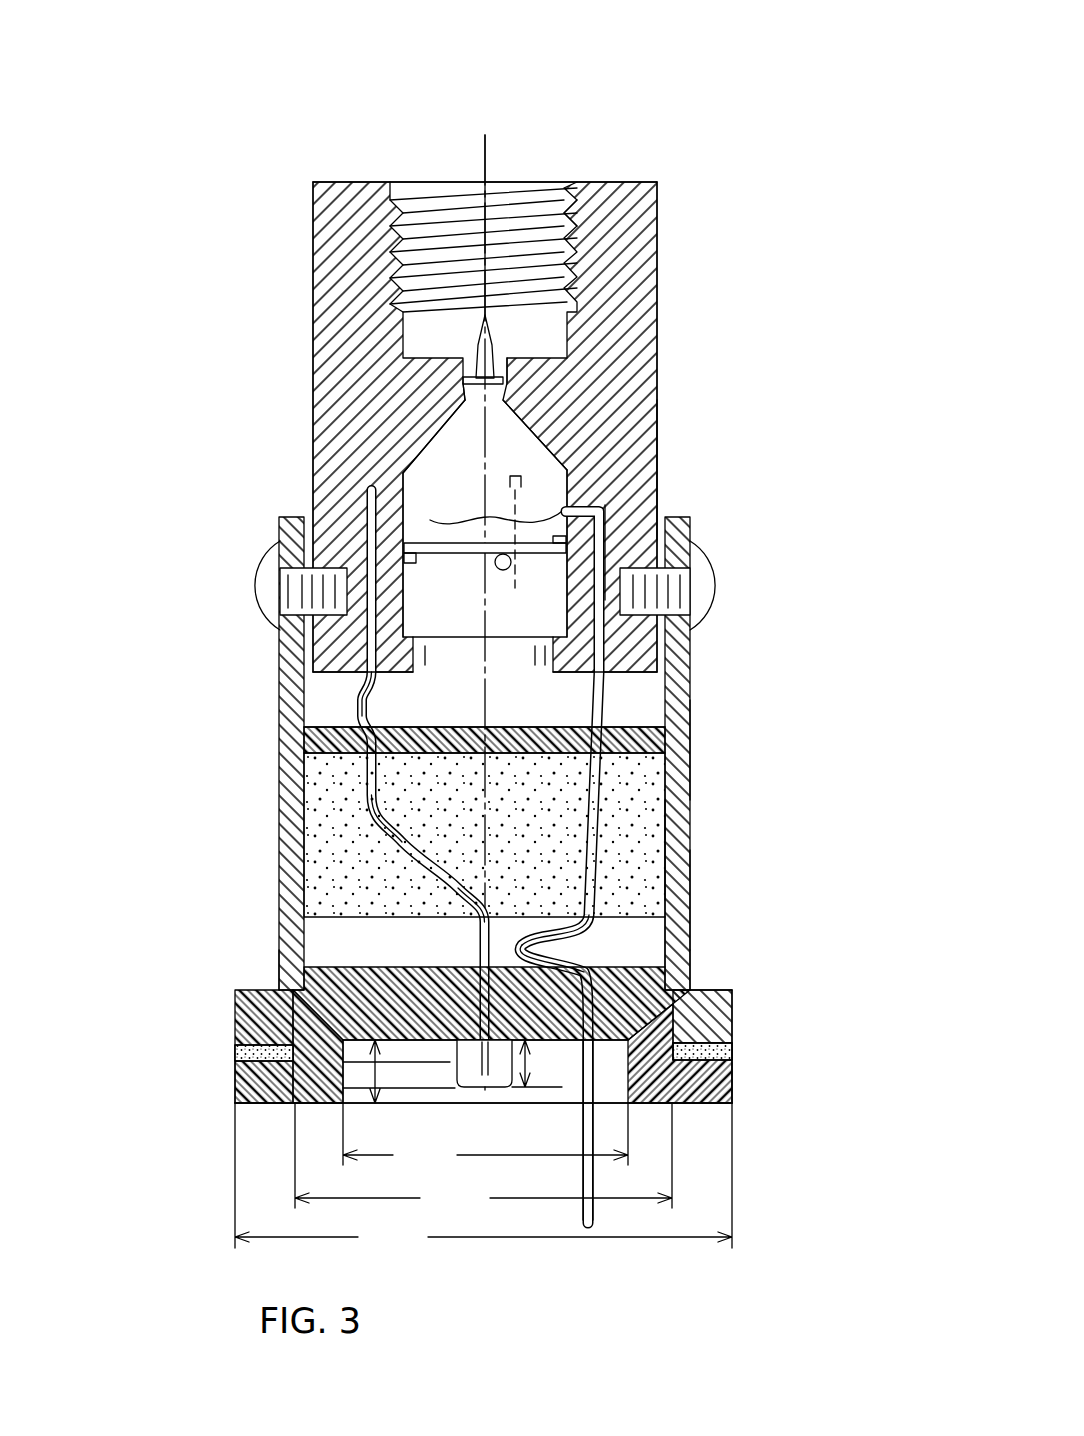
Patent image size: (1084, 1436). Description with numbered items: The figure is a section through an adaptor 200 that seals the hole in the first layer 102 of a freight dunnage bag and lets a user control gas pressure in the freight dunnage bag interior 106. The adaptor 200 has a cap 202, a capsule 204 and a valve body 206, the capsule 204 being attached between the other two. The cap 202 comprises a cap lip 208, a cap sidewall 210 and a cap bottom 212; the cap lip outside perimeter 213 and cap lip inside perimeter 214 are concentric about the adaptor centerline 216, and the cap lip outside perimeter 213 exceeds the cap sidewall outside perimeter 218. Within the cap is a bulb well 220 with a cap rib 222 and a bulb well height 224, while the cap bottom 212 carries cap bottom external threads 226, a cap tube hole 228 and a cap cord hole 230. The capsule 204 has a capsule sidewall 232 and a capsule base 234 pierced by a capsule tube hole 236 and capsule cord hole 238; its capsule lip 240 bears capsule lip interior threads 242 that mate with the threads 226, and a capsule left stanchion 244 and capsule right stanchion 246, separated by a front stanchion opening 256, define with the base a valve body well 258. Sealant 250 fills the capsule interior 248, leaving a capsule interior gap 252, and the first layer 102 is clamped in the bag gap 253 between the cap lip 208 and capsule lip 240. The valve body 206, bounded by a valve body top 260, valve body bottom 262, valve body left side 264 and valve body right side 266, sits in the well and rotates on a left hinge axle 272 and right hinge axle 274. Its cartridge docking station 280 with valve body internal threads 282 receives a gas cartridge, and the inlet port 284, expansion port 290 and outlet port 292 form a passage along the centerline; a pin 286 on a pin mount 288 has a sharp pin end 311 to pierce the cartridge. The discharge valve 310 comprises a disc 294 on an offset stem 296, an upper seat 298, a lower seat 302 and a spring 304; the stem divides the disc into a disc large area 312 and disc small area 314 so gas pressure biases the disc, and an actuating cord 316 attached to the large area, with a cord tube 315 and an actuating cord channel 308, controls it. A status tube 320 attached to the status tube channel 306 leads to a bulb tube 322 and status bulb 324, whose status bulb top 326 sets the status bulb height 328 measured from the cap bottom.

The first layer 102 is at (235, 1052).
The freight dunnage bag interior 106 is at (563, 698).
The adaptor 200 is at (657, 197).
The cap 202 is at (733, 1100).
The capsule 204 is at (690, 805).
The valve body 206 is at (625, 452).
The cap lip 208 is at (235, 1077).
The cap sidewall 210 is at (643, 1105).
The cap bottom 212 is at (688, 982).
The cap lip outside perimeter 213 is at (483, 1165).
The cap lip inside perimeter 214 is at (485, 1138).
The adaptor centerline 216 is at (488, 135).
The cap sidewall outside perimeter 218 is at (483, 1160).
The bulb well 220 is at (294, 1103).
The cap rib 222 is at (410, 1050).
The bulb well height 224 is at (237, 1105).
The cap bottom external threads 226 is at (732, 1023).
The cap tube hole 228 is at (447, 962).
The cap cord hole 230 is at (732, 1010).
The capsule sidewall 232 is at (643, 850).
The capsule base 234 is at (690, 770).
The capsule tube hole 236 is at (304, 740).
The capsule cord hole 238 is at (660, 880).
The capsule lip 240 is at (733, 1052).
The capsule lip interior threads 242 is at (279, 978).
The capsule left stanchion 244 is at (258, 587).
The capsule right stanchion 246 is at (677, 517).
The capsule interior 248 is at (357, 950).
The sealant 250 is at (690, 895).
The capsule interior gap 252 is at (633, 955).
The bag gap 253 is at (687, 1105).
The front stanchion opening 256 is at (643, 708).
The valve body well 258 is at (330, 690).
The valve body top 260 is at (373, 182).
The valve body bottom 262 is at (357, 705).
The valve body left side 264 is at (313, 272).
The valve body right side 266 is at (657, 262).
The left hinge axle 272 is at (282, 611).
The right hinge axle 274 is at (702, 607).
The cartridge docking station 280 is at (530, 200).
The valve body internal threads 282 is at (575, 185).
The inlet port 284 is at (447, 438).
The pin 286 is at (545, 328).
The pin mount 288 is at (585, 395).
The expansion port 290 is at (463, 387).
The outlet port 292 is at (543, 620).
The disc 294 is at (404, 548).
The stem 296 is at (512, 566).
The upper seat 298 is at (607, 530).
The lower seat 302 is at (404, 615).
The spring 304 is at (600, 547).
The status tube channel 306 is at (404, 480).
The actuating cord channel 308 is at (657, 474).
The discharge valve 310 is at (367, 530).
The sharp pin end 311 is at (520, 345).
The disc large area 312 is at (430, 520).
The disc small area 314 is at (530, 507).
The cord tube 315 is at (633, 927).
The actuating cord 316 is at (597, 1190).
The status tube 320 is at (368, 823).
The bulb tube 322 is at (450, 920).
The status bulb 324 is at (457, 1087).
The status bulb top 326 is at (483, 1090).
The status bulb height 328 is at (567, 1213).